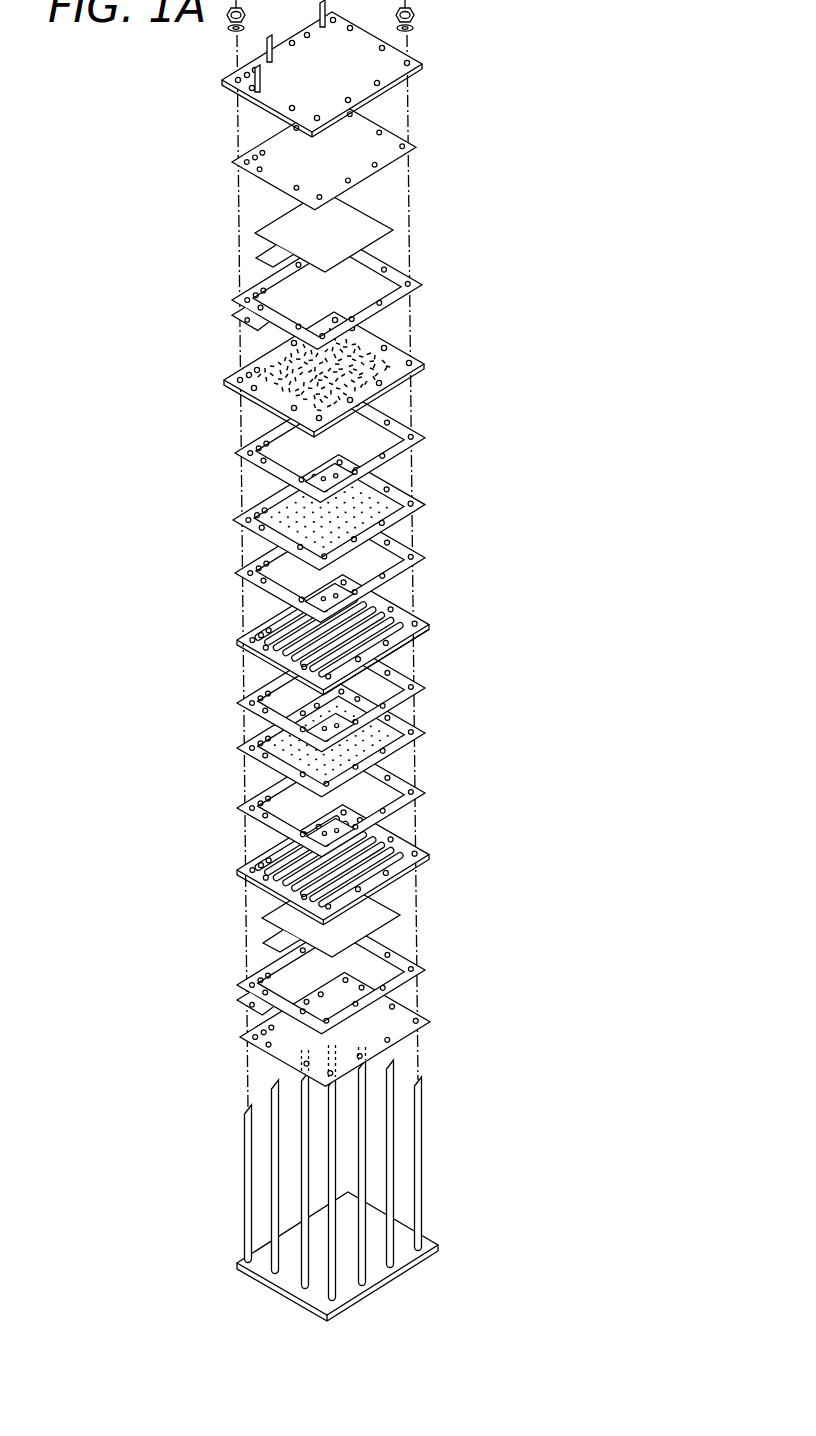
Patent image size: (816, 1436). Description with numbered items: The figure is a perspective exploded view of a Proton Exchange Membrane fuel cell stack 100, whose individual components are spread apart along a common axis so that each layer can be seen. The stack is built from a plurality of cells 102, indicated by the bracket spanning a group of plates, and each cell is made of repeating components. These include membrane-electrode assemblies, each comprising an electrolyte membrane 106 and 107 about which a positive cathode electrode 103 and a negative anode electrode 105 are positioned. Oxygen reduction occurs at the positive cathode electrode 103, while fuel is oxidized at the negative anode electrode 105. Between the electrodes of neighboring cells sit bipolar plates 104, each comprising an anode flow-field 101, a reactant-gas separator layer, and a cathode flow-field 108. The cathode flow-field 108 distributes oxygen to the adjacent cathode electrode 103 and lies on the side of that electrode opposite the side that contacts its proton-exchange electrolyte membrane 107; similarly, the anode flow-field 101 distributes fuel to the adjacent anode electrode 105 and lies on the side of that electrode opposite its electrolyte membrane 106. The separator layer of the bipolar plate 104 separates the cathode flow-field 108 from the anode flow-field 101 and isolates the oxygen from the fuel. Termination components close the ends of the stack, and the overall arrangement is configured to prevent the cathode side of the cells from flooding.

The PEM fuel cell stack 100 is at (563, 110).
The anode flow-field 101 is at (388, 618).
The cells 102 is at (240, 647).
The positive cathode electrode 103 is at (424, 365).
The bipolar plate 104 is at (424, 632).
The negative anode electrode 105 is at (428, 860).
The electrolyte membrane 106 is at (422, 515).
The electrolyte membrane 107 is at (428, 745).
The cathode flow-field 108 is at (395, 657).